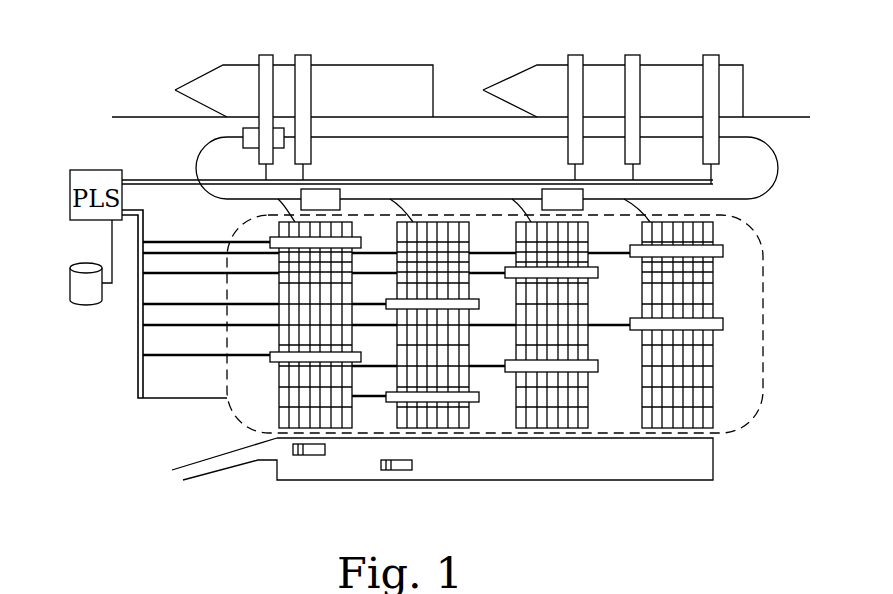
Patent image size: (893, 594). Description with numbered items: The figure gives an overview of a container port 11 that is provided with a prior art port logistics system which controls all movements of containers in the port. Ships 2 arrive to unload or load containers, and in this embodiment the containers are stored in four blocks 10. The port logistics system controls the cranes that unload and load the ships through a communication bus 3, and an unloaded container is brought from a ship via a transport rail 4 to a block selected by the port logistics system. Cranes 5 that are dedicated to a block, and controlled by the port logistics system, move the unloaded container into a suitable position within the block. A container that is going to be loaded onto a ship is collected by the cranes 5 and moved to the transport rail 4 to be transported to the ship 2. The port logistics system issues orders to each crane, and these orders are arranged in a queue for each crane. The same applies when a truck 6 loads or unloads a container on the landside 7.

The ship 2 is at (223, 85).
The communication bus 3 is at (172, 180).
The transport rail 4 is at (773, 168).
The crane 5 is at (270, 236).
The truck 6 is at (310, 455).
The landside 7 is at (677, 470).
The block 10 is at (275, 417).
The port 11 is at (157, 33).